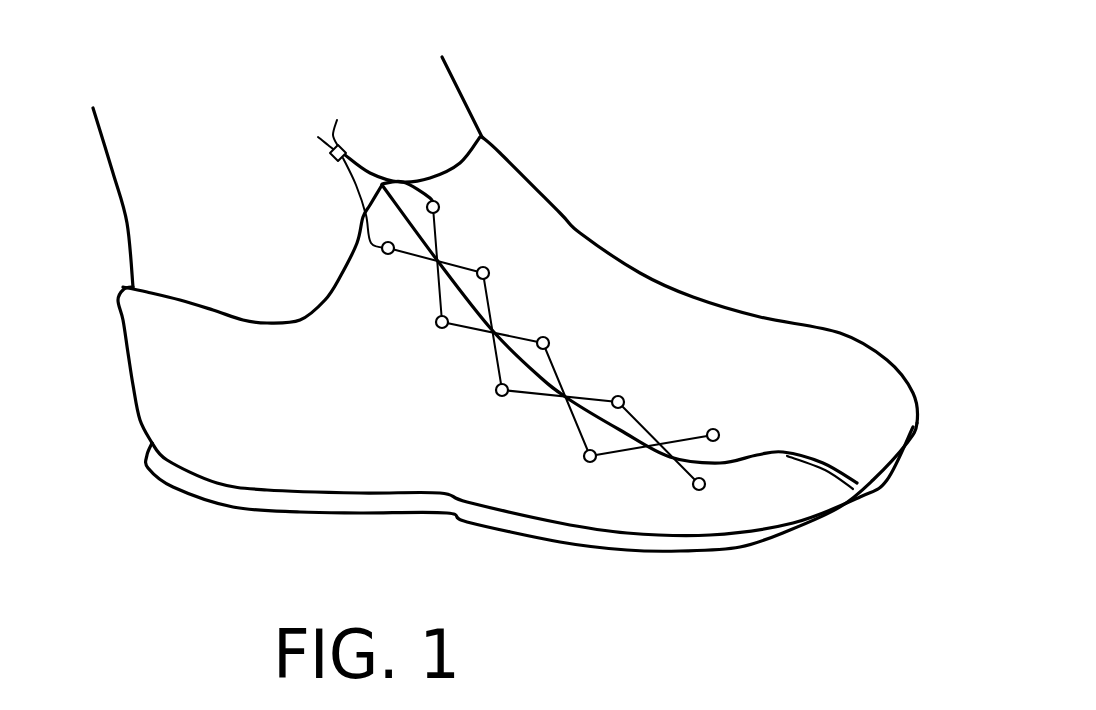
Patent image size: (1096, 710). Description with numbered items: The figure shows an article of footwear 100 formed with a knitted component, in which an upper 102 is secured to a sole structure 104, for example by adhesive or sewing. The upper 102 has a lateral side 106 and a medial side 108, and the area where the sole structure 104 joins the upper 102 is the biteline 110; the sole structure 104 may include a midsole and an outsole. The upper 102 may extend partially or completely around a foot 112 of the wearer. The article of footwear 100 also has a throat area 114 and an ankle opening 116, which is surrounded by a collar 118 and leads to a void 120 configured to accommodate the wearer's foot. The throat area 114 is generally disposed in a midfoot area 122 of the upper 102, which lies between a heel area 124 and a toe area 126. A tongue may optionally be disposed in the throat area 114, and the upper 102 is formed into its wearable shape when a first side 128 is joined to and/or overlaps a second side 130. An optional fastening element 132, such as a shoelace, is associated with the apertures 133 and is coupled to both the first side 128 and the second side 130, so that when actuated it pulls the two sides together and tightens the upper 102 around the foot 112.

The article of footwear 100 is at (697, 95).
The upper 102 is at (893, 393).
The sole structure 104 is at (812, 527).
The lateral side 106 is at (383, 460).
The medial side 108 is at (582, 235).
The biteline 110 is at (838, 510).
The foot 112 is at (254, 281).
The throat area 114 is at (593, 302).
The ankle opening 116 is at (183, 302).
The collar 118 is at (118, 290).
The void 120 is at (305, 254).
The midfoot area 122 is at (452, 483).
The heel area 124 is at (160, 413).
The toe area 126 is at (857, 353).
The first side 128 is at (757, 376).
The second side 130 is at (423, 413).
The fastening element 132 is at (620, 450).
The apertures 133 is at (703, 490).